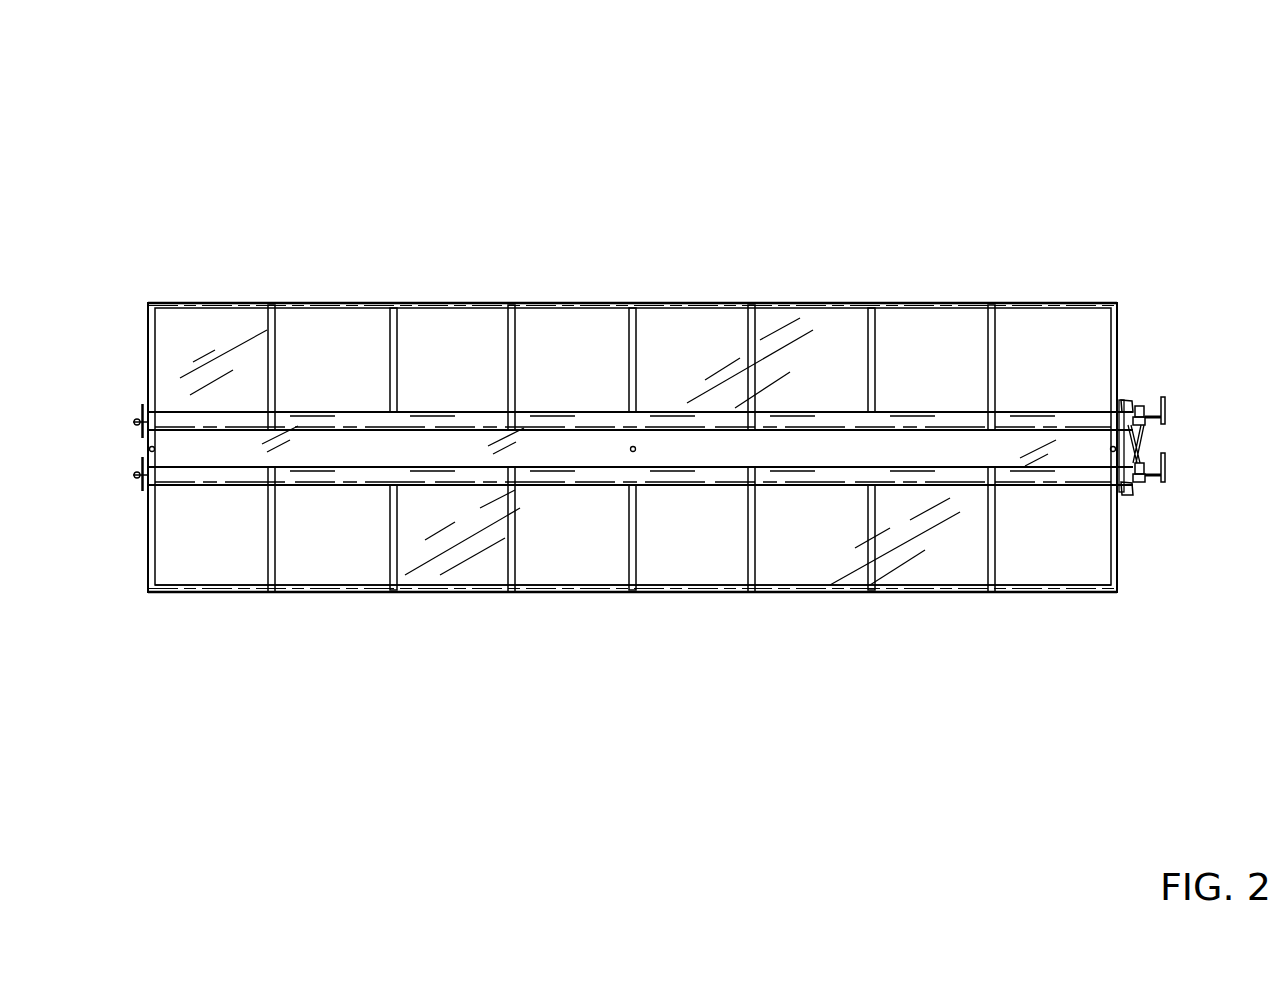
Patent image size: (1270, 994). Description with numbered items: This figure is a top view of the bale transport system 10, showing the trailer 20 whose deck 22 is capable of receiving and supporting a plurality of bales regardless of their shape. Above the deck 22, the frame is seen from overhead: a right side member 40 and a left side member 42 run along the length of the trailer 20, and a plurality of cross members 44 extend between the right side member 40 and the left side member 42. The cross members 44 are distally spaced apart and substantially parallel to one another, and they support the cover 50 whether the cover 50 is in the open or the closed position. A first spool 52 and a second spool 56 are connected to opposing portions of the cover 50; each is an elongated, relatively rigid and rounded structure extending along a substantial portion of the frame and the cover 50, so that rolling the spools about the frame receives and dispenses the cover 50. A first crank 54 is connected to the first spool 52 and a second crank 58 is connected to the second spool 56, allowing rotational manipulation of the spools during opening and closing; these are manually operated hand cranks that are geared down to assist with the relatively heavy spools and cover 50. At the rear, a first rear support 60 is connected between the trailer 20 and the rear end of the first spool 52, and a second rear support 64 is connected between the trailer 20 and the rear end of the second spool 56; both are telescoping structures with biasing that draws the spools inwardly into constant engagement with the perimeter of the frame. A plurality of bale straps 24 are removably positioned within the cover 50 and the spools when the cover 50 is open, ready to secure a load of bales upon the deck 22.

The bale transport system 10 is at (993, 124).
The trailer 20 is at (202, 304).
The deck 22 is at (203, 563).
The bale straps 24 is at (273, 343).
The right side member 40 is at (446, 303).
The left side member 42 is at (705, 587).
The cross members 44 is at (153, 398).
The cover 50 is at (676, 450).
The first spool 52 is at (1124, 398).
The first crank 54 is at (1168, 418).
The second spool 56 is at (1127, 480).
The second crank 58 is at (1167, 474).
The first rear support 60 is at (1132, 488).
The second rear support 64 is at (1128, 404).